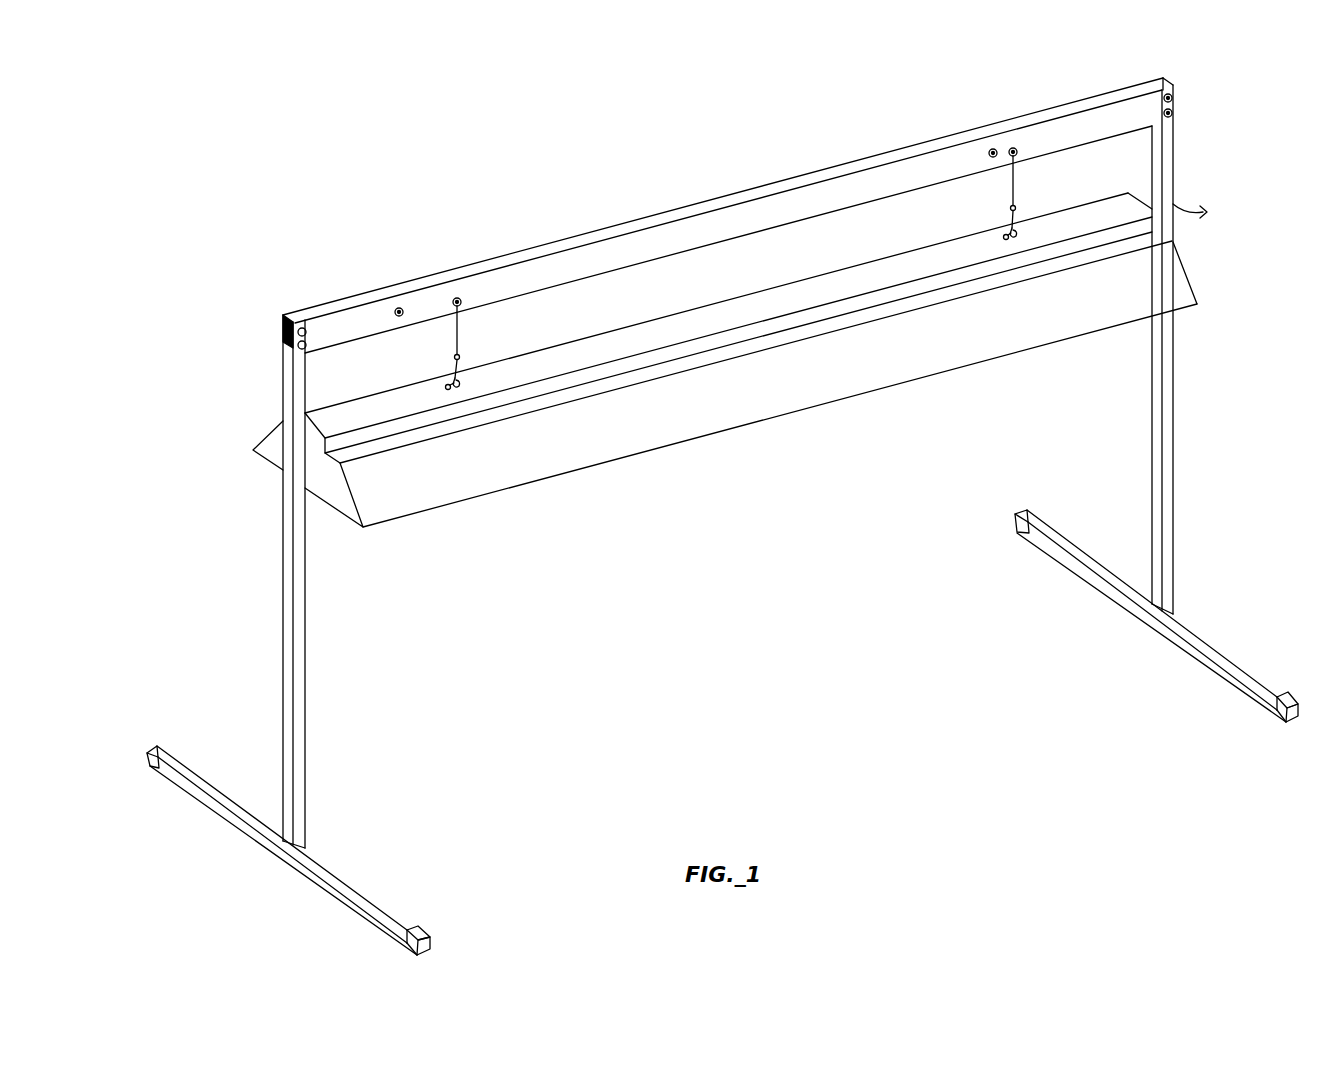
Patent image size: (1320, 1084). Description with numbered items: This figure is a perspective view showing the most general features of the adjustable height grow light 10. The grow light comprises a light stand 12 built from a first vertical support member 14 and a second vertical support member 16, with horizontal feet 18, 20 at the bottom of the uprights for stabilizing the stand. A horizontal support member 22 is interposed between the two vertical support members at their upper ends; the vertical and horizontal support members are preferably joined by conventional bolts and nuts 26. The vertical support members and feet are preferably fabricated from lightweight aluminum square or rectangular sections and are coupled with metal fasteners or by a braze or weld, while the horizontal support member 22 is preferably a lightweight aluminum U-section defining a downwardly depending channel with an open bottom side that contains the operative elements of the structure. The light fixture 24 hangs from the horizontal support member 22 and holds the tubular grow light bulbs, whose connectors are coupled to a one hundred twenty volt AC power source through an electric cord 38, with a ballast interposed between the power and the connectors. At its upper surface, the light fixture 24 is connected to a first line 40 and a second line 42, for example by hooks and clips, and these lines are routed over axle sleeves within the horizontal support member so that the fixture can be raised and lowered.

The adjustable height grow light 10 is at (464, 210).
The light stand 12 is at (283, 314).
The first vertical support member 14 is at (283, 580).
The second vertical support member 16 is at (1173, 441).
The horizontal foot 18 is at (195, 788).
The horizontal foot 20 is at (1062, 556).
The horizontal support member 22 is at (708, 199).
The light fixture 24 is at (733, 410).
The bolts and nuts 26 is at (1176, 103).
The electric cord 38 is at (1190, 208).
The first line 40 is at (455, 340).
The second line 42 is at (1018, 193).